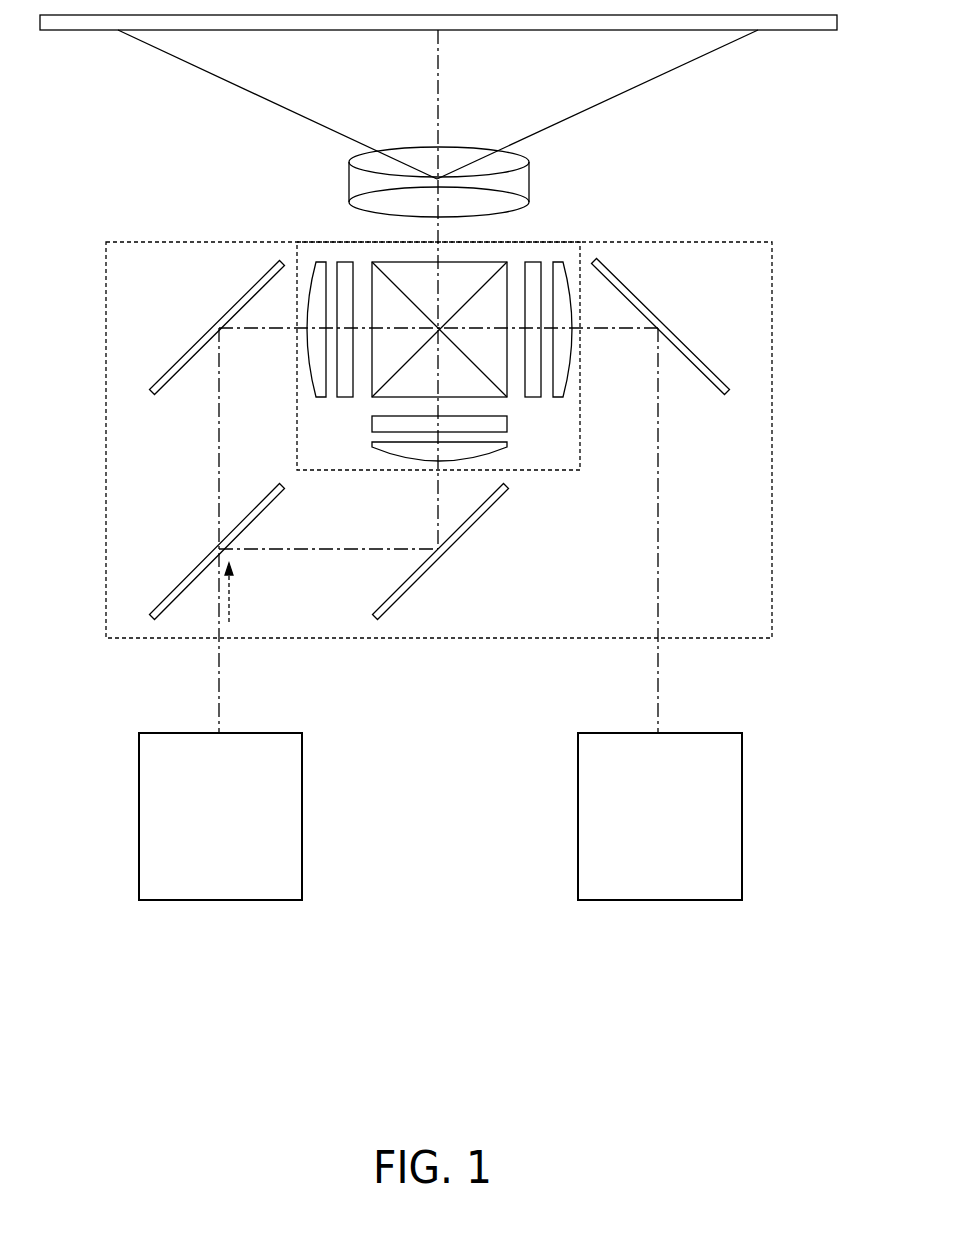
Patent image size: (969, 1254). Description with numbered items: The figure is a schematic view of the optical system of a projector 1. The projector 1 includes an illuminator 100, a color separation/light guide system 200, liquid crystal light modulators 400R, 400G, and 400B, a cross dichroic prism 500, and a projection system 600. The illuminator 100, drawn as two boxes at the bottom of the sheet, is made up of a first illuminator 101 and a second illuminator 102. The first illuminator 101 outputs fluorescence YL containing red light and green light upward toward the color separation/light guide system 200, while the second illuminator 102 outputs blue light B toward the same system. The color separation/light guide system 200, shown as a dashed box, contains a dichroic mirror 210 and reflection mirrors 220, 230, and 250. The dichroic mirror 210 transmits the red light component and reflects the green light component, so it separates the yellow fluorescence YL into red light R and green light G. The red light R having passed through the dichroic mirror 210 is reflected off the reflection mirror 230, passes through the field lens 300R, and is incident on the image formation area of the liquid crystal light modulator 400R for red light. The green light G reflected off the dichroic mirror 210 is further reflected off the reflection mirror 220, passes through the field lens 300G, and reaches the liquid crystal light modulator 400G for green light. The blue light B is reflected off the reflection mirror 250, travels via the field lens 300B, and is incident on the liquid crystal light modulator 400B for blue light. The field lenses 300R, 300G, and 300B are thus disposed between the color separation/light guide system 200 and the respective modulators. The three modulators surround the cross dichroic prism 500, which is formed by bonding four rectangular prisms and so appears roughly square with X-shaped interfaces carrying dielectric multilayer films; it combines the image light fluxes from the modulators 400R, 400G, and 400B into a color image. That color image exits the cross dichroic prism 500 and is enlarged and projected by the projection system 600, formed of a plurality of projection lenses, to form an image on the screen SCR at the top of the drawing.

The projector 1 is at (781, 216).
The screen SCR is at (803, 31).
The projection system 600 is at (418, 158).
The color separation/light guide system 200 is at (106, 384).
The cross dichroic prism 500 is at (452, 272).
The liquid crystal light modulator for red light 400R is at (343, 261).
The field lens 300R is at (316, 261).
The liquid crystal light modulator for blue light 400B is at (533, 261).
The field lens 300B is at (558, 261).
The liquid crystal light modulator for green light 400G is at (377, 423).
The field lens 300G is at (378, 447).
The reflection mirror 230 is at (192, 342).
The reflection mirror 250 is at (688, 348).
The dichroic mirror 210 is at (182, 581).
The reflection mirror 220 is at (415, 583).
The red light R is at (219, 490).
The green light G is at (288, 549).
The blue light B is at (649, 597).
The fluorescence YL is at (232, 600).
The illuminator 100 is at (440, 895).
The first illuminator 101 is at (284, 900).
The second illuminator 102 is at (596, 900).